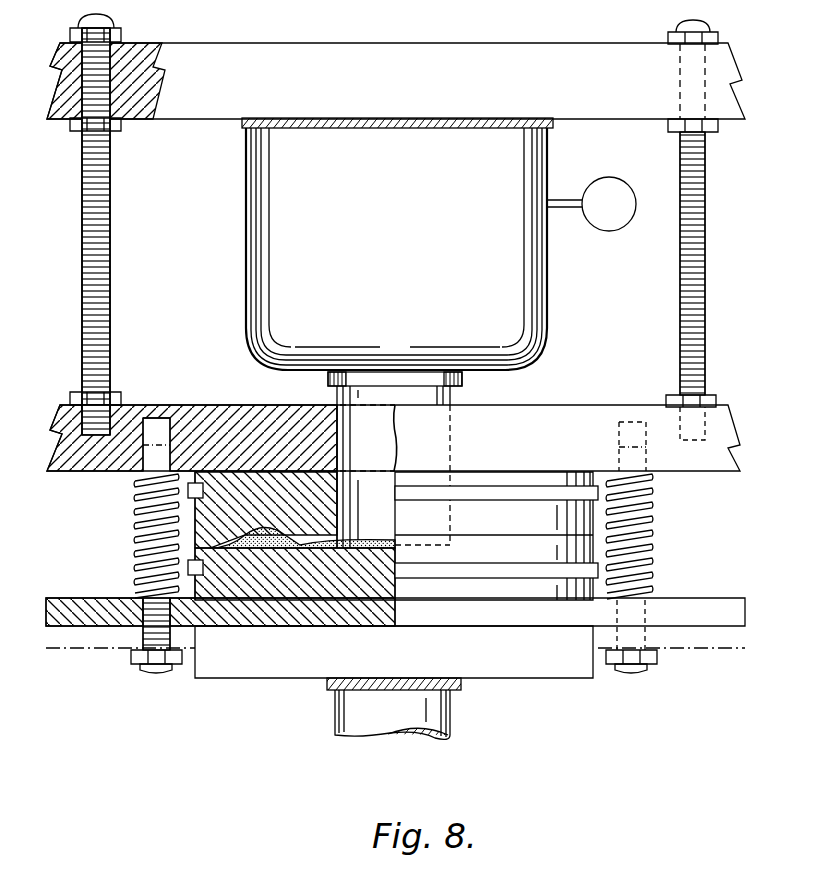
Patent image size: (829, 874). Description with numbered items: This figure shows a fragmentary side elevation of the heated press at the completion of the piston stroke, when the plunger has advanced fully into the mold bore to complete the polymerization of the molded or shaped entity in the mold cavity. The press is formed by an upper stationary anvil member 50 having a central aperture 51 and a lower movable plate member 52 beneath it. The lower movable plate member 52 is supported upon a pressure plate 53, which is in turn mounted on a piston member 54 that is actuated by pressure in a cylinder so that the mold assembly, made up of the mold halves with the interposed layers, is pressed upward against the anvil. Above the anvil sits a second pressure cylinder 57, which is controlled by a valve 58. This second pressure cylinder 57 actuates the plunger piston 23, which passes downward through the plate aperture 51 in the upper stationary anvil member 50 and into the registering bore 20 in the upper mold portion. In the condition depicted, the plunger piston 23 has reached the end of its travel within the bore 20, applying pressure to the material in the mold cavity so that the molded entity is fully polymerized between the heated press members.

The bore 20 is at (343, 520).
The plunger piston 23 is at (332, 406).
The upper stationary anvil member 50 is at (556, 405).
The central aperture 51 is at (333, 437).
The lower movable plate member 52 is at (677, 604).
The pressure plate 53 is at (210, 680).
The piston member 54 is at (452, 719).
The second pressure cylinder 57 is at (532, 163).
The valve 58 is at (622, 191).